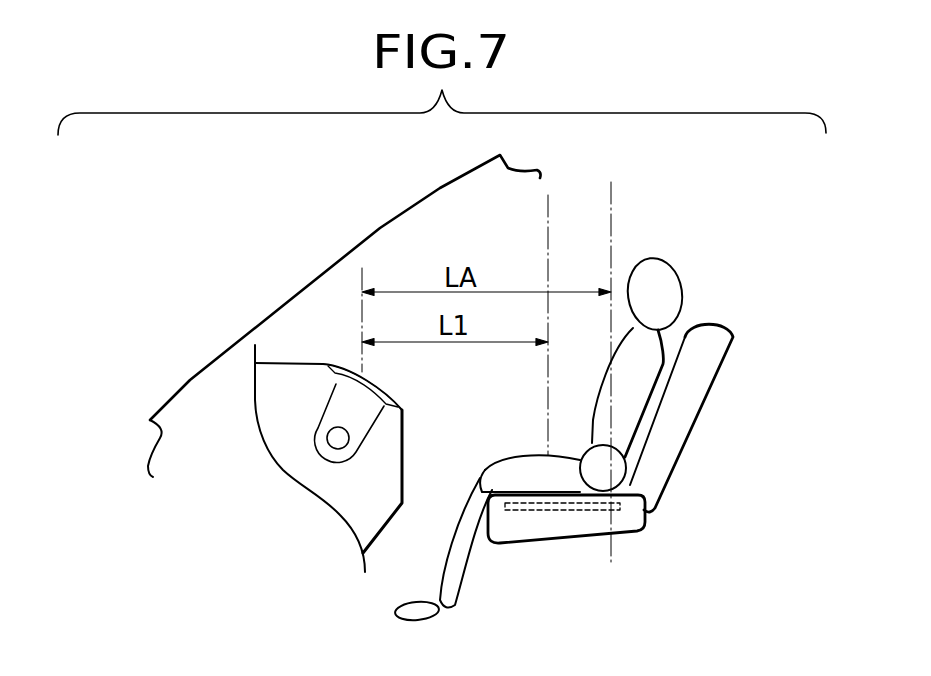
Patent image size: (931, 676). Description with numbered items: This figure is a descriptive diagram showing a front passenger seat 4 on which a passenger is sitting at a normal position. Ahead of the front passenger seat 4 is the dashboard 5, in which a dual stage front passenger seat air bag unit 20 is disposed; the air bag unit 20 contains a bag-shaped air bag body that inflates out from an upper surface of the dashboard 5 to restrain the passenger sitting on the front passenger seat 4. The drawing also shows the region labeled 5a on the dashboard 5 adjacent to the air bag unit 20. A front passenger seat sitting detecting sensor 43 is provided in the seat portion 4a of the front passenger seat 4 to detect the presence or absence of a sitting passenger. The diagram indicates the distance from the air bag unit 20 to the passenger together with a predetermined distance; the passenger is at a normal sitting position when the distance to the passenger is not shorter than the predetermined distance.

The front passenger seat 4 is at (719, 328).
The seat portion 4a is at (523, 531).
The front passenger seat sitting detecting sensor 43 is at (567, 511).
The dashboard 5 is at (403, 454).
The airbag module mounting portion 5a is at (303, 362).
The dual stage front passenger seat air bag unit 20 is at (347, 365).